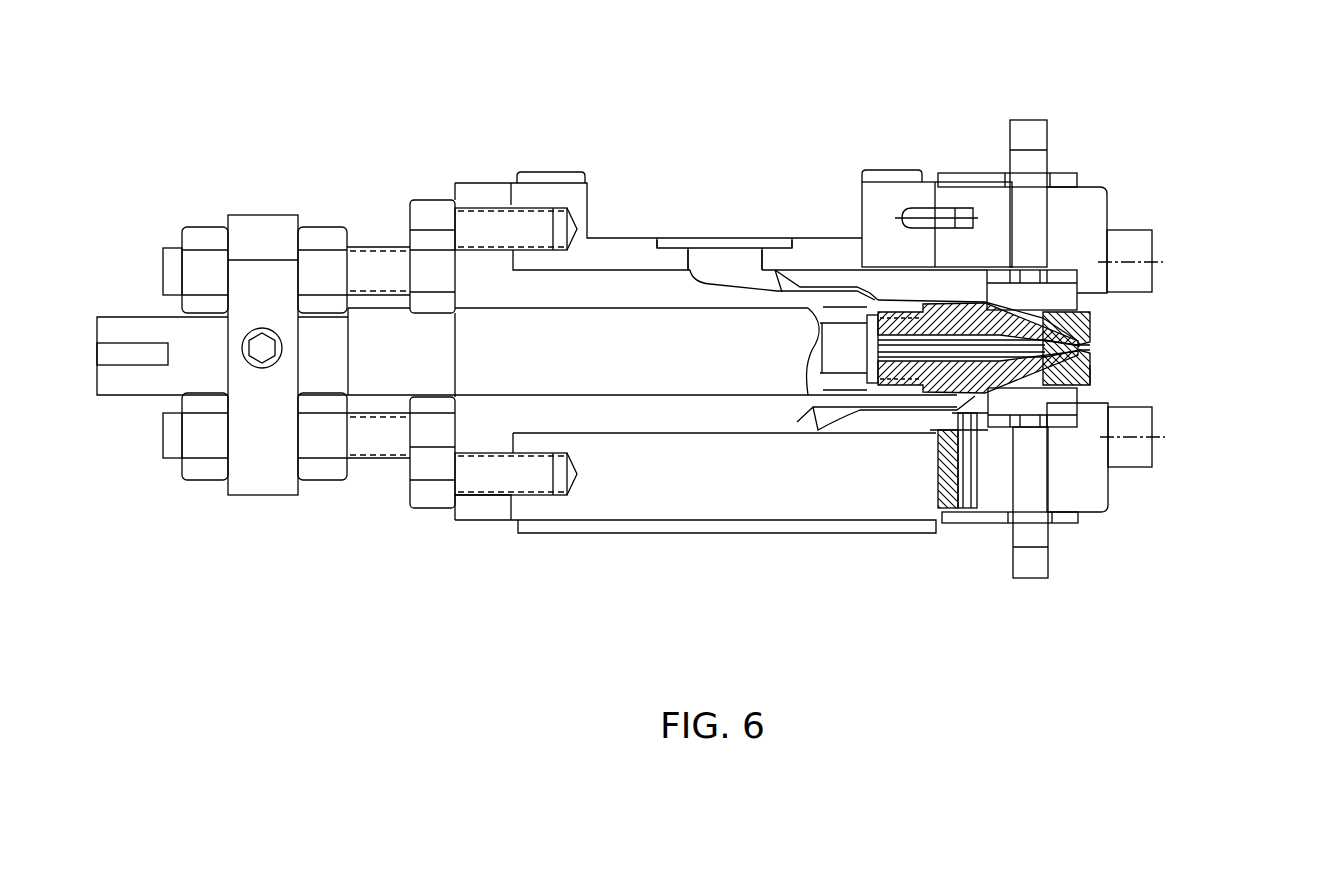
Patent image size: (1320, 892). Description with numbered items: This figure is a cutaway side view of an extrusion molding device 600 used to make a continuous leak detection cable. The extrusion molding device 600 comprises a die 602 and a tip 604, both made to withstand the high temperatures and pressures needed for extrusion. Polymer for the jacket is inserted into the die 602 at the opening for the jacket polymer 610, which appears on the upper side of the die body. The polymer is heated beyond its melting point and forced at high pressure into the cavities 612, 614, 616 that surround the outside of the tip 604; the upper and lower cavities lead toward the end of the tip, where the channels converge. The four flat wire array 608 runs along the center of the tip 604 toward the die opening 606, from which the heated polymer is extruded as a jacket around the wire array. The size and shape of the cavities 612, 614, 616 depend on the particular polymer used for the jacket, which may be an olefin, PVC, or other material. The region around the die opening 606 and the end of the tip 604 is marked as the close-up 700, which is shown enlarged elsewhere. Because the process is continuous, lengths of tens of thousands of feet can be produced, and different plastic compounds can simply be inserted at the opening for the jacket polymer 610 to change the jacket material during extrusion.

The extrusion molding device 600 is at (560, 596).
The die 602 is at (388, 505).
The tip 604 is at (1010, 370).
The opening 606 is at (1093, 350).
The four flat wire array 608 is at (1003, 330).
The opening for the jacket polymer 610 is at (720, 237).
The cavity 612 is at (843, 283).
The cavity 614 is at (990, 303).
The cavity 616 is at (967, 385).
The close-up 700 is at (1093, 372).